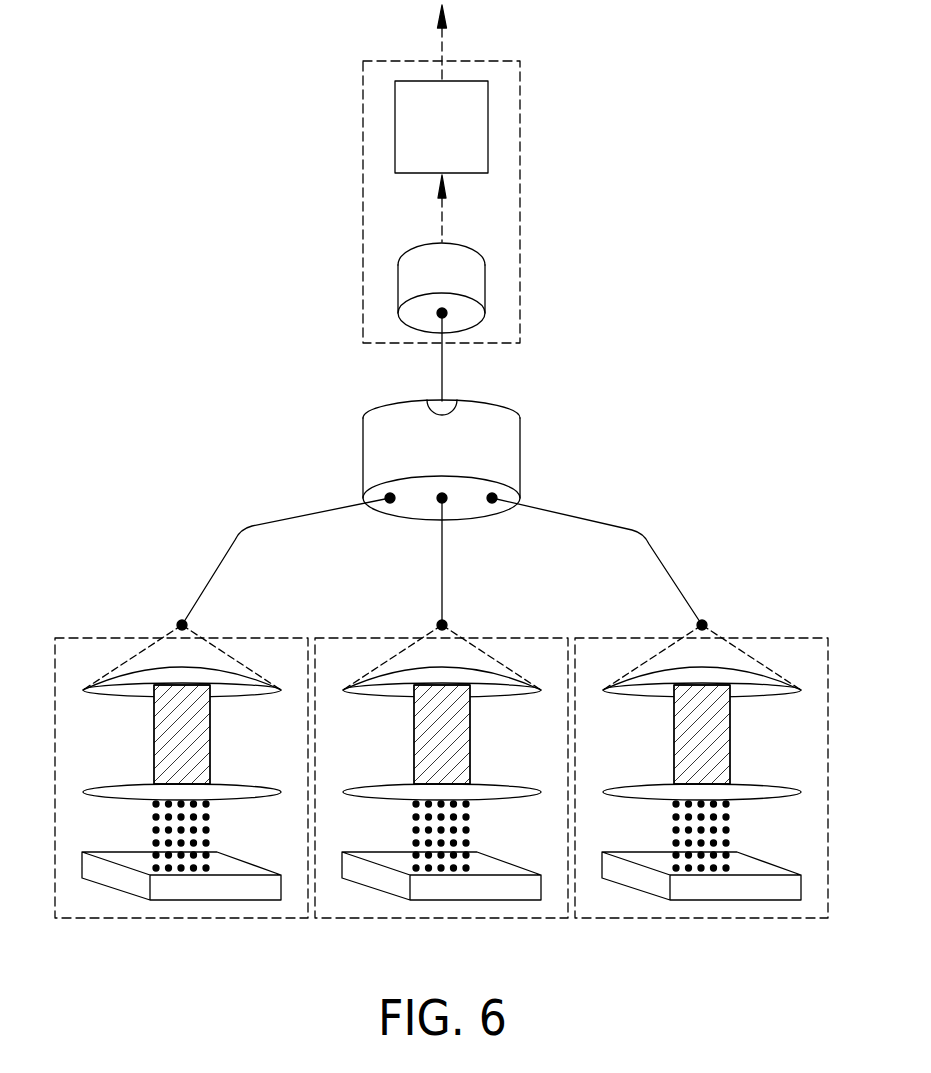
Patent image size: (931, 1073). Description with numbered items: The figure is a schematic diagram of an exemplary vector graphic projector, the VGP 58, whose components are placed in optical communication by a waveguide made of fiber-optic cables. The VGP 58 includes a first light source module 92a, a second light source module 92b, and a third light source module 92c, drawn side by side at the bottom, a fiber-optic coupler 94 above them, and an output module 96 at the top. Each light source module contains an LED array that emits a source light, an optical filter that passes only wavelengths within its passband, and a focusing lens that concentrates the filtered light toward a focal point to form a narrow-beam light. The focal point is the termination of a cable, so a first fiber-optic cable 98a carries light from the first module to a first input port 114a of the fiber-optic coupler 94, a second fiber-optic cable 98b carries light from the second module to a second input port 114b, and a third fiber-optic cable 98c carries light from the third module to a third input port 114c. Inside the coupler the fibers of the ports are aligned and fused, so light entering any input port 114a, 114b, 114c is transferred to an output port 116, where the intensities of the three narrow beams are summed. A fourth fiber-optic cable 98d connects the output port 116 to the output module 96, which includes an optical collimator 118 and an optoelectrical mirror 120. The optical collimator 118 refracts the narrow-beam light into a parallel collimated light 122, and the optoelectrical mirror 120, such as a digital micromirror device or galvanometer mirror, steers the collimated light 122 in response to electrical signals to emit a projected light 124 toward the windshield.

The vector graphic projector 58 is at (181, 372).
The first light source module 92a is at (99, 933).
The second light source module 92b is at (435, 816).
The third light source module 92c is at (695, 816).
The fiber-optic coupler 94 is at (456, 455).
The output module 96 is at (350, 103).
The first fiber-optic cable 98a is at (280, 521).
The second fiber-optic cable 98b is at (442, 572).
The third fiber-optic cable 98c is at (610, 522).
The fourth fiber-optic cable 98d is at (442, 362).
The first input port 114a is at (390, 498).
The second input port 114b is at (442, 498).
The third input port 114c is at (492, 498).
The output port 116 is at (470, 402).
The optical collimator 118 is at (462, 283).
The optoelectrical mirror 120 is at (463, 140).
The collimated light 122 is at (440, 220).
The projected light 124 is at (446, 46).